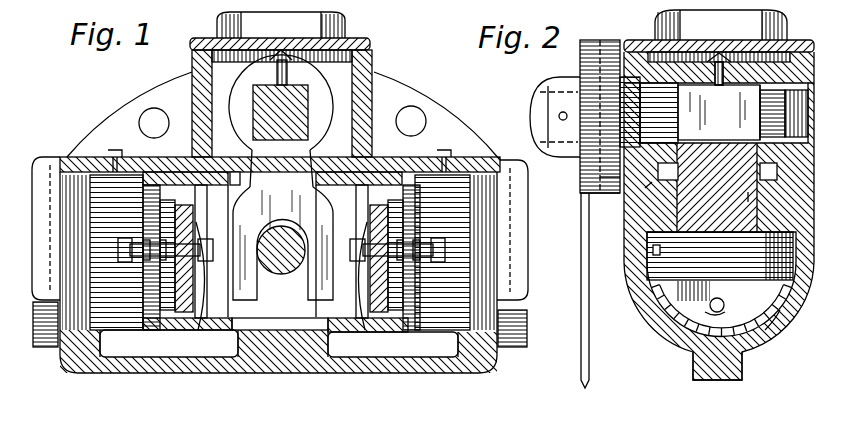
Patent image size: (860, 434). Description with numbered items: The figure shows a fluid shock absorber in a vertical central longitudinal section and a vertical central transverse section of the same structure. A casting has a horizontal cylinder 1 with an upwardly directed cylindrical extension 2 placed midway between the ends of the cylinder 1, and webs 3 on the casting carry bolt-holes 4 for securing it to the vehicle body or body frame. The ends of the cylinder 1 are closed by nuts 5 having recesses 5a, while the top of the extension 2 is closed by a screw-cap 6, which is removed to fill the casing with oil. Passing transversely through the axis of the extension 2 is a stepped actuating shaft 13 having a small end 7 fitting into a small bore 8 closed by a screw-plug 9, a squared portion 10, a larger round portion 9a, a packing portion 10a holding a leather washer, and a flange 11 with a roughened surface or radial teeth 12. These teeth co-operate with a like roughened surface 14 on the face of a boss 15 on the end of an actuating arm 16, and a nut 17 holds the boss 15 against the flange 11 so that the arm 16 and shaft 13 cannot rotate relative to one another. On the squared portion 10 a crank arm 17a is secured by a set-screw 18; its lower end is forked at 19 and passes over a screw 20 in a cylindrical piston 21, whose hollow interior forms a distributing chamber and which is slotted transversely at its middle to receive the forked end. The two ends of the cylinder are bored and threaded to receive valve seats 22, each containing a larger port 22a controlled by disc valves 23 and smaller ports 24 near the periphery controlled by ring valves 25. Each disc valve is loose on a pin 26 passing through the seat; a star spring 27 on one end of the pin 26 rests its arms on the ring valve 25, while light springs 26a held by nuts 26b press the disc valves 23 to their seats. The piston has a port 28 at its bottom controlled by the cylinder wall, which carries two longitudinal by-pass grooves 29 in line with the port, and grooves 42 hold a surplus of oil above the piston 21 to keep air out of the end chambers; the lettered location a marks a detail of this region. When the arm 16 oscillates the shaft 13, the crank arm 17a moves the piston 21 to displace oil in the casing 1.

In FIG. 1, the horizontal cylinder 1 is at (97, 165).
In FIG. 2, the horizontal cylinder 1 is at (797, 290).
In FIG. 1, the cylindrical extension 2 is at (373, 76).
In FIG. 2, the cylindrical extension 2 is at (802, 74).
In FIG. 1, the webs 3 is at (115, 118).
In FIG. 1, the bolt-holes 4 is at (152, 113).
In FIG. 1, the nuts 5 is at (43, 346).
In FIG. 1, the recesses 5a is at (54, 243).
In FIG. 1, the screw-cap 6 is at (207, 48).
In FIG. 2, the screw-cap 6 is at (788, 58).
In FIG. 1, the small end 7 is at (250, 90).
In FIG. 2, the small end 7 is at (788, 90).
In FIG. 2, the small bore 8 is at (800, 112).
In FIG. 2, the screw-plug 9 is at (806, 125).
In FIG. 2, the larger round portion 9a is at (602, 177).
In FIG. 1, the squared portion 10 is at (310, 100).
In FIG. 2, the squared portion 10 is at (719, 112).
In FIG. 2, the packing portion 10a is at (618, 78).
In FIG. 2, the flange 11 is at (618, 45).
In FIG. 2, the roughened surface 12 is at (605, 108).
In FIG. 2, the actuating shaft 13 is at (545, 118).
In FIG. 2, the roughened surface 14 is at (600, 124).
In FIG. 2, the boss 15 is at (590, 42).
In FIG. 2, the actuating arm 16 is at (583, 375).
In FIG. 2, the nut 17 is at (605, 152).
In FIG. 1, the crank arm 17a is at (305, 153).
In FIG. 2, the crank arm 17a is at (748, 197).
In FIG. 1, the set-screw 18 is at (291, 62).
In FIG. 2, the set-screw 18 is at (660, 66).
In FIG. 1, the forked end 19 is at (252, 300).
In FIG. 2, the forked end 19 is at (770, 332).
In FIG. 1, the screw 20 is at (281, 268).
In FIG. 2, the screw 20 is at (668, 268).
In FIG. 1, the cylindrical piston 21 is at (180, 320).
In FIG. 2, the cylindrical piston 21 is at (716, 328).
In FIG. 1, the valve seats 22 is at (108, 350).
In FIG. 1, the larger port 22a is at (143, 285).
In FIG. 1, the disc valves 23 is at (150, 218).
In FIG. 1, the smaller ports 24 is at (140, 307).
In FIG. 1, the ring valves 25 is at (183, 327).
In FIG. 2, the ring valves 25 is at (752, 334).
In FIG. 1, the pin 26 is at (145, 262).
In FIG. 1, the light springs 26a is at (143, 244).
In FIG. 1, the nuts 26b is at (160, 238).
In FIG. 1, the star spring 27 is at (202, 280).
In FIG. 2, the star spring 27 is at (709, 312).
In FIG. 1, the port 28 is at (295, 328).
In FIG. 2, the port 28 is at (714, 312).
In FIG. 1, the by-pass grooves 29 is at (118, 348).
In FIG. 2, the by-pass grooves 29 is at (709, 381).
In FIG. 1, the grooves 42 is at (232, 172).
In FIG. 2, the grooves 42 is at (778, 170).
In FIG. 2, the opening a is at (645, 188).